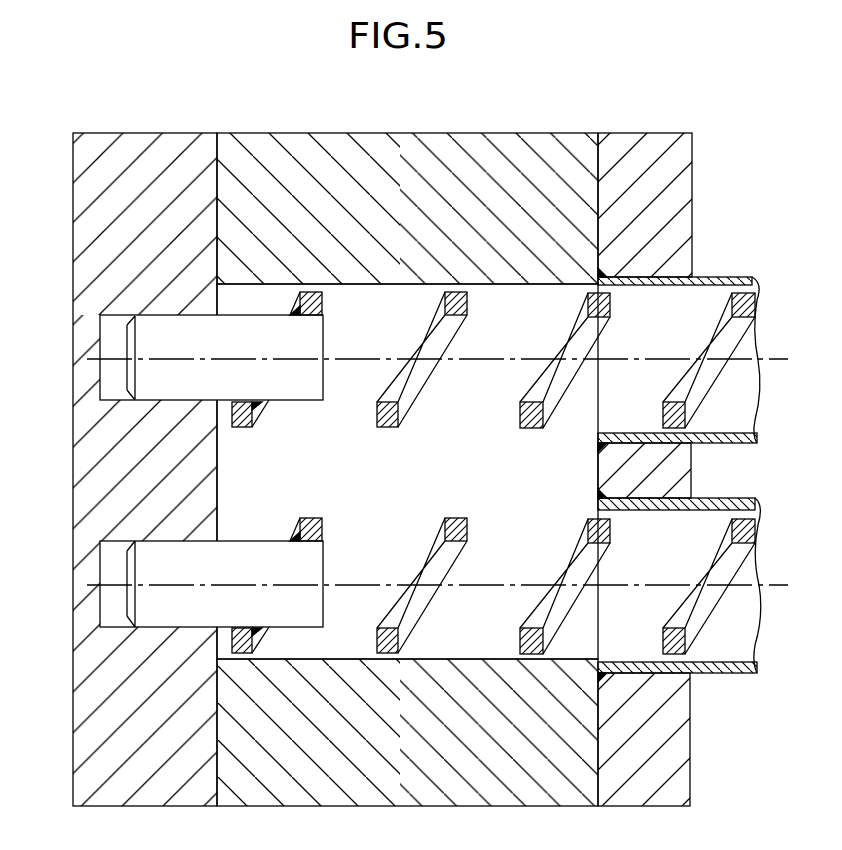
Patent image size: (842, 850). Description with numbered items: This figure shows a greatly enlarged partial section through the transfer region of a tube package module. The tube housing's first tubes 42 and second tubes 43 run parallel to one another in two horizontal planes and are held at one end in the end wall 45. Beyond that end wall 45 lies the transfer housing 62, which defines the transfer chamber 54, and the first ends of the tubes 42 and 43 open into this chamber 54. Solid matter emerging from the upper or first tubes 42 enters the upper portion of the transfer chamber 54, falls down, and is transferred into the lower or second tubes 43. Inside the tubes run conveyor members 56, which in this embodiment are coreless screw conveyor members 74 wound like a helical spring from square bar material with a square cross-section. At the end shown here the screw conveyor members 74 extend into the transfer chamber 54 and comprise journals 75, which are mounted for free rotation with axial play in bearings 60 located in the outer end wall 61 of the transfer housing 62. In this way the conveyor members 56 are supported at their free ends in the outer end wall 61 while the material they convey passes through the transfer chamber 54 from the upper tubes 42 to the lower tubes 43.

The outer end wall 61 is at (152, 162).
The transfer housing 62 is at (405, 122).
The end wall 45 is at (652, 187).
The transfer chamber 54 is at (314, 477).
The bearings 60 is at (173, 488).
The journals 75 is at (170, 341).
The first tubes 42 is at (735, 405).
The second tubes 43 is at (733, 637).
The conveyor members 56 is at (438, 385).
The coreless screw conveyor members 74 is at (386, 430).